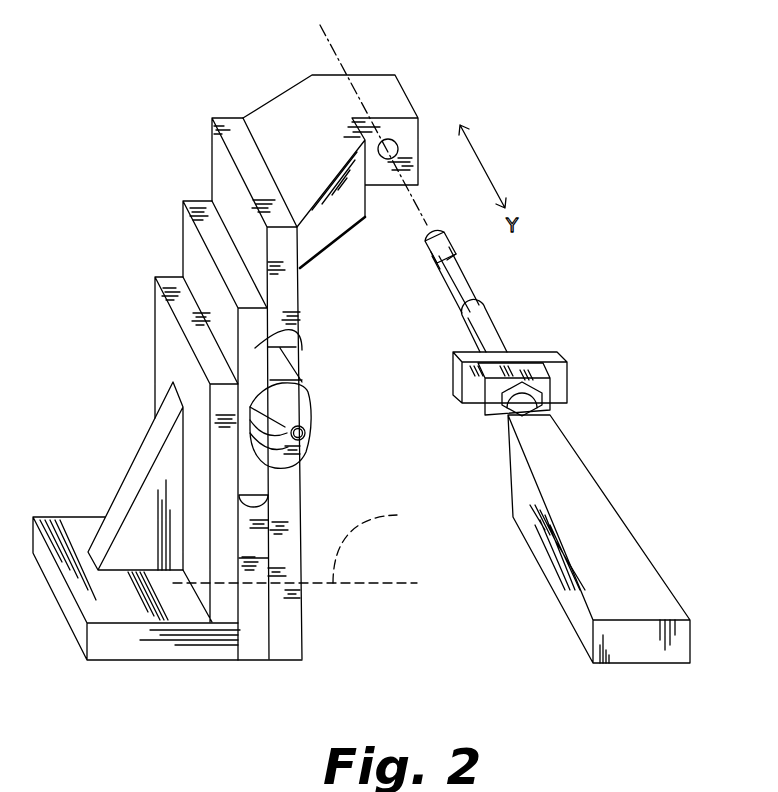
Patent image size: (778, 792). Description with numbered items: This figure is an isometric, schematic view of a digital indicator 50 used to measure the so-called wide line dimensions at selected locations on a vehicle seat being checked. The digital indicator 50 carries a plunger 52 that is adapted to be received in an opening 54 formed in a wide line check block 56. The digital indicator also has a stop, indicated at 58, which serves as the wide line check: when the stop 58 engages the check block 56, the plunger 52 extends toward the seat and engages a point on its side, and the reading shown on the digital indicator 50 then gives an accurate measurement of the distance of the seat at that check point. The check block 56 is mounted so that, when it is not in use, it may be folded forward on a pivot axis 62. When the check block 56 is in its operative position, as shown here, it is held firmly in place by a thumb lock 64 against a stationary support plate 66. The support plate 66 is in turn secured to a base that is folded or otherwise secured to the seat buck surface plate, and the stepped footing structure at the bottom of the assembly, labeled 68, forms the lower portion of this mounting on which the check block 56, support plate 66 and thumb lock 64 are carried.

The digital indicator 50 is at (575, 478).
The plunger 52 is at (472, 293).
The opening 54 is at (396, 142).
The wide line check block 56 is at (284, 118).
The stop 58 is at (562, 370).
The pivot axis 62 is at (306, 543).
The thumb lock 64 is at (305, 395).
The stationary support plate 66 is at (293, 340).
The base plate 68 is at (127, 610).